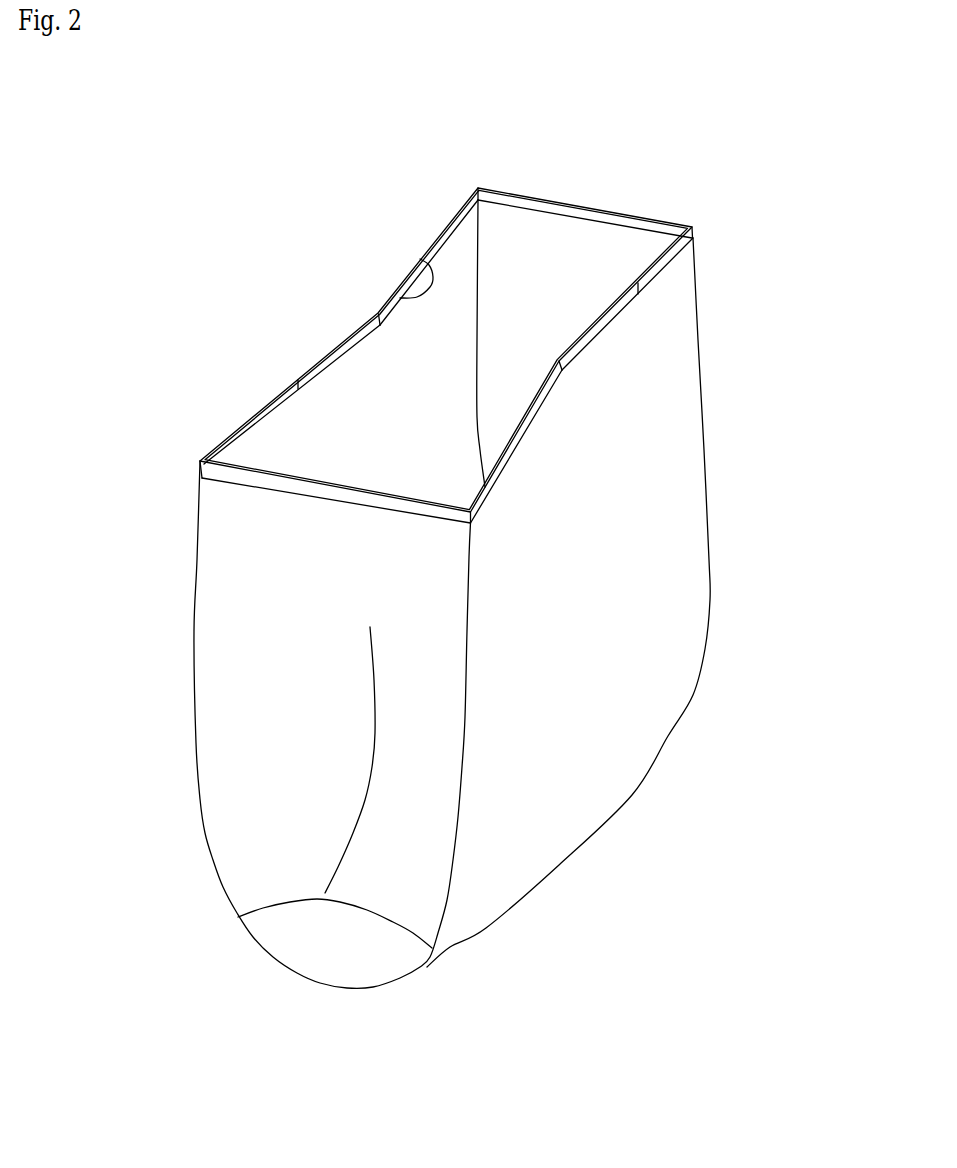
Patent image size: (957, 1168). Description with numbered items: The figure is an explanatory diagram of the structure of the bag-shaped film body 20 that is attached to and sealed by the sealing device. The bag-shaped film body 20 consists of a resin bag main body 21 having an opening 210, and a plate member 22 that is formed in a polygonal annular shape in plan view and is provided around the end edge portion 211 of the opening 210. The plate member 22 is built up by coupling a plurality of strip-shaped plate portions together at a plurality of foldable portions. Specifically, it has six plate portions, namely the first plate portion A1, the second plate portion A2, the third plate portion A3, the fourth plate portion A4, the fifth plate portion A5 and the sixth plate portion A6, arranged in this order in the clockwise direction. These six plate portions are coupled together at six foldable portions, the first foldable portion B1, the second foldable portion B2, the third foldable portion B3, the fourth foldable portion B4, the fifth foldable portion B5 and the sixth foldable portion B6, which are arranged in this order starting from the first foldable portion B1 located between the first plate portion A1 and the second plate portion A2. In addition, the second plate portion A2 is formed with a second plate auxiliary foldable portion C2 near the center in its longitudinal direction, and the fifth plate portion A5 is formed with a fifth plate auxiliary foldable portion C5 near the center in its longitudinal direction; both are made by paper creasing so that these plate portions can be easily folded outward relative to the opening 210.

The bag-shaped film body 20 is at (668, 188).
The resin bag main body 21 is at (601, 711).
The plate member 22 is at (537, 199).
The opening 210 is at (356, 394).
The end edge portion 211 is at (432, 275).
The first plate portion A1 is at (612, 218).
The second plate portion A2 is at (610, 323).
The third plate portion A3 is at (533, 425).
The fourth plate portion A4 is at (340, 498).
The fifth plate portion A5 is at (257, 423).
The sixth plate portion A6 is at (455, 216).
The first foldable portion B1 is at (692, 233).
The second foldable portion B2 is at (565, 370).
The third foldable portion B3 is at (473, 522).
The fourth foldable portion B4 is at (198, 478).
The fifth foldable portion B5 is at (378, 313).
The sixth foldable portion B6 is at (478, 188).
The second plate auxiliary foldable portion C2 is at (641, 290).
The fifth plate auxiliary foldable portion C5 is at (298, 381).